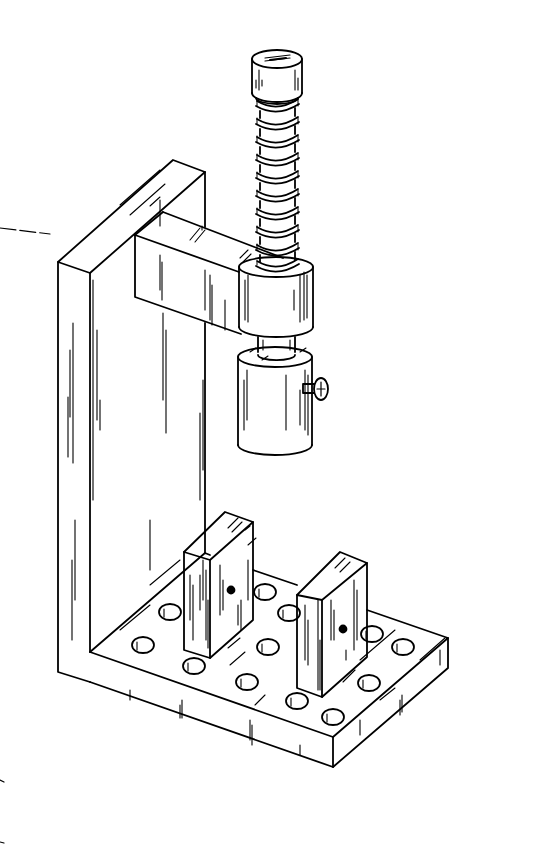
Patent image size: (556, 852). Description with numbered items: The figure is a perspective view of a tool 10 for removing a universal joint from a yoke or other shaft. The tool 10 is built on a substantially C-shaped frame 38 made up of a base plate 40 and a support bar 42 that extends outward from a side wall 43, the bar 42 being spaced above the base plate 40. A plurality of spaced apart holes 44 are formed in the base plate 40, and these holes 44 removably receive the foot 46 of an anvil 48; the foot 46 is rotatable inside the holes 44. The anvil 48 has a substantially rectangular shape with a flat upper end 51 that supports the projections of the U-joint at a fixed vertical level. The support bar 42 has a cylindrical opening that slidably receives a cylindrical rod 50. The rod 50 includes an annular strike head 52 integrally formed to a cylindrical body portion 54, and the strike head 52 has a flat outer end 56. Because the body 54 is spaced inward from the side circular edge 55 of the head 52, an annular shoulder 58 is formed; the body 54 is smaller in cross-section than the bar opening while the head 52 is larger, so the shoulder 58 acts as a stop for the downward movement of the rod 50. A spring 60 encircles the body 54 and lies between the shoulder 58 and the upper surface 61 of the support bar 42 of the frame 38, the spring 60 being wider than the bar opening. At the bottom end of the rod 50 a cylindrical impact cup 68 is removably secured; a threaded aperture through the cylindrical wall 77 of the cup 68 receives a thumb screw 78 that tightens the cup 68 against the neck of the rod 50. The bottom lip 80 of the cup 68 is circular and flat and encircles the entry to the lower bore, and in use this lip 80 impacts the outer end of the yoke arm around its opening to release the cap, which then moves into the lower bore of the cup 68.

The tool 10 is at (153, 140).
The frame 38 is at (96, 228).
The base plate 40 is at (168, 657).
The support bar 42 is at (197, 297).
The side wall 43 is at (75, 432).
The holes 44 is at (285, 608).
The foot 46 is at (236, 644).
The anvil 48 is at (258, 536).
The cylindrical rod 50 is at (305, 53).
The flat upper end 51 is at (203, 545).
The strike head 52 is at (262, 54).
The cylindrical body portion 54 is at (298, 348).
The side circular edge 55 is at (304, 78).
The flat outer end 56 is at (283, 54).
The annular shoulder 58 is at (254, 96).
The spring 60 is at (298, 132).
The upper surface 61 is at (220, 237).
The impact cup 68 is at (269, 423).
The cylindrical wall 77 is at (306, 425).
The thumb screw 78 is at (331, 388).
The bottom lip 80 is at (304, 452).